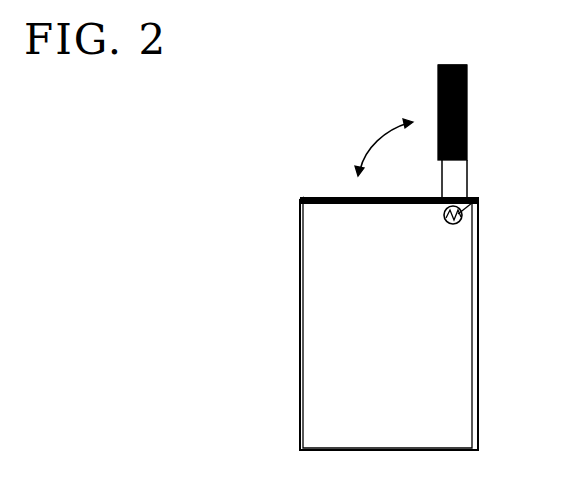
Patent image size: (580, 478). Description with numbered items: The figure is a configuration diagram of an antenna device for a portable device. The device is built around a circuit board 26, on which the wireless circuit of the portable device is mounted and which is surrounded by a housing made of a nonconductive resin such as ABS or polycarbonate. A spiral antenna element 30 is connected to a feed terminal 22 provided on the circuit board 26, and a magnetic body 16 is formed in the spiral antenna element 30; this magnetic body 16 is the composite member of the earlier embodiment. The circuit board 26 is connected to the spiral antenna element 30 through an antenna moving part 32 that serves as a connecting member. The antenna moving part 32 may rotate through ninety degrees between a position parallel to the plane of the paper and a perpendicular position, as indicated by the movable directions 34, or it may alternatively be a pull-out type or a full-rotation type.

The magnetic body 16 is at (440, 70).
The feed terminal 22 is at (475, 207).
The circuit board 26 is at (455, 305).
The spiral antenna element 30 is at (467, 113).
The antenna moving part 32 is at (452, 178).
The movable directions 34 is at (379, 147).